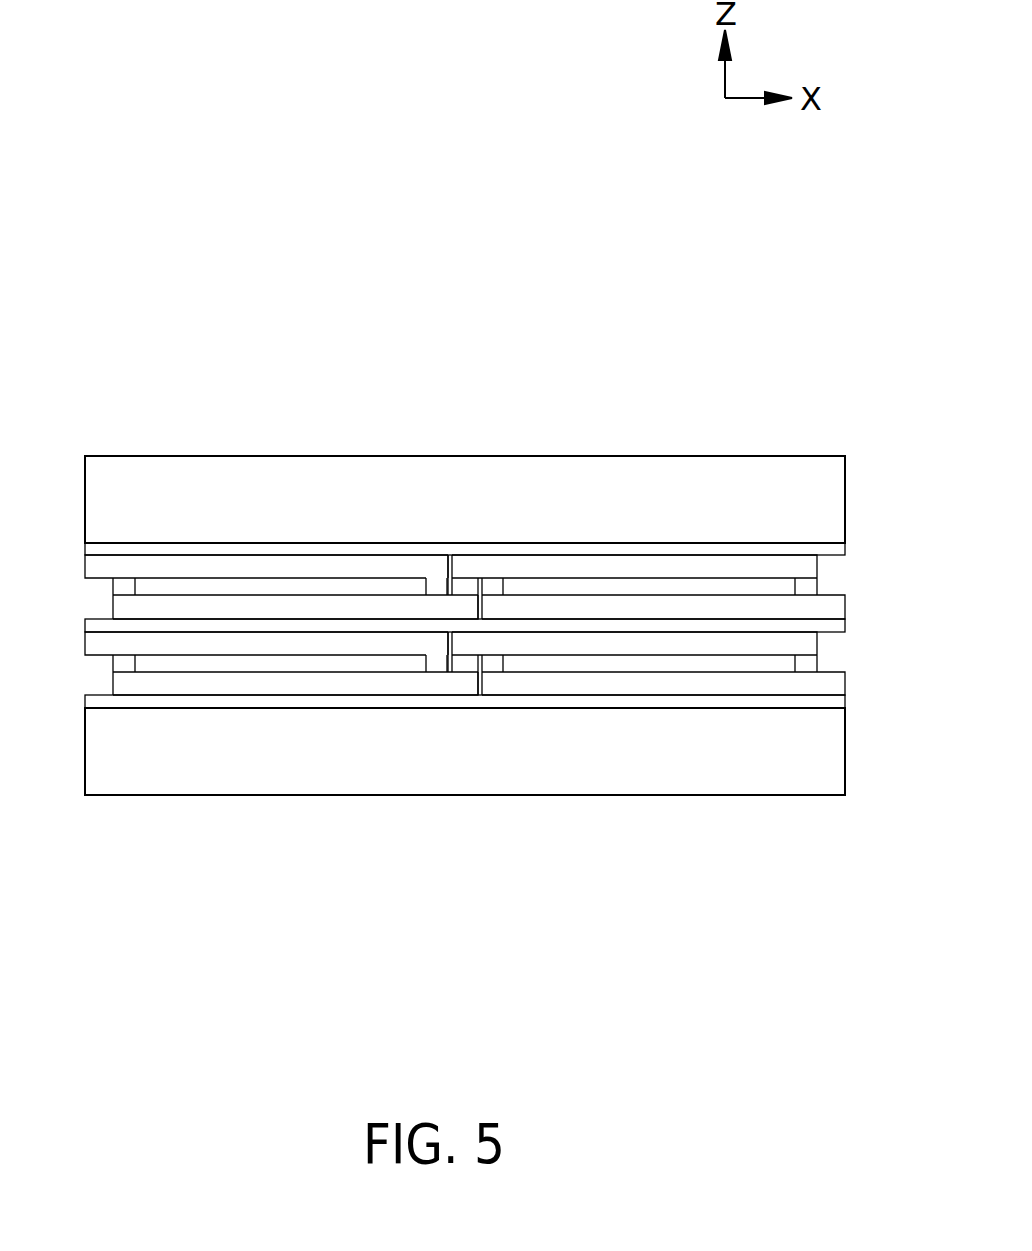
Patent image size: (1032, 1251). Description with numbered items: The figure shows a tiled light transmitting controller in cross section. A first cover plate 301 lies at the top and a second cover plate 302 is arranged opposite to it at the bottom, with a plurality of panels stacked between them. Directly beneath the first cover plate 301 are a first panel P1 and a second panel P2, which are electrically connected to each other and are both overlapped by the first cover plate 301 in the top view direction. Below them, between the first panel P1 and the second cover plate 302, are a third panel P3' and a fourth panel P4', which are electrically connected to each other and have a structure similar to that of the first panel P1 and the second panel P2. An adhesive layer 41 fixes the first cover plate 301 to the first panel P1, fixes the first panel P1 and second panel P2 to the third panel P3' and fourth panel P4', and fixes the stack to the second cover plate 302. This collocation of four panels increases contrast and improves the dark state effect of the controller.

The first cover plate 301 is at (827, 495).
The second cover plate 302 is at (827, 747).
The adhesive layer 41 is at (84, 549).
The first panel P1 is at (75, 560).
The second panel P2 is at (855, 557).
The third panel P3' is at (248, 663).
The fourth panel P4' is at (684, 663).